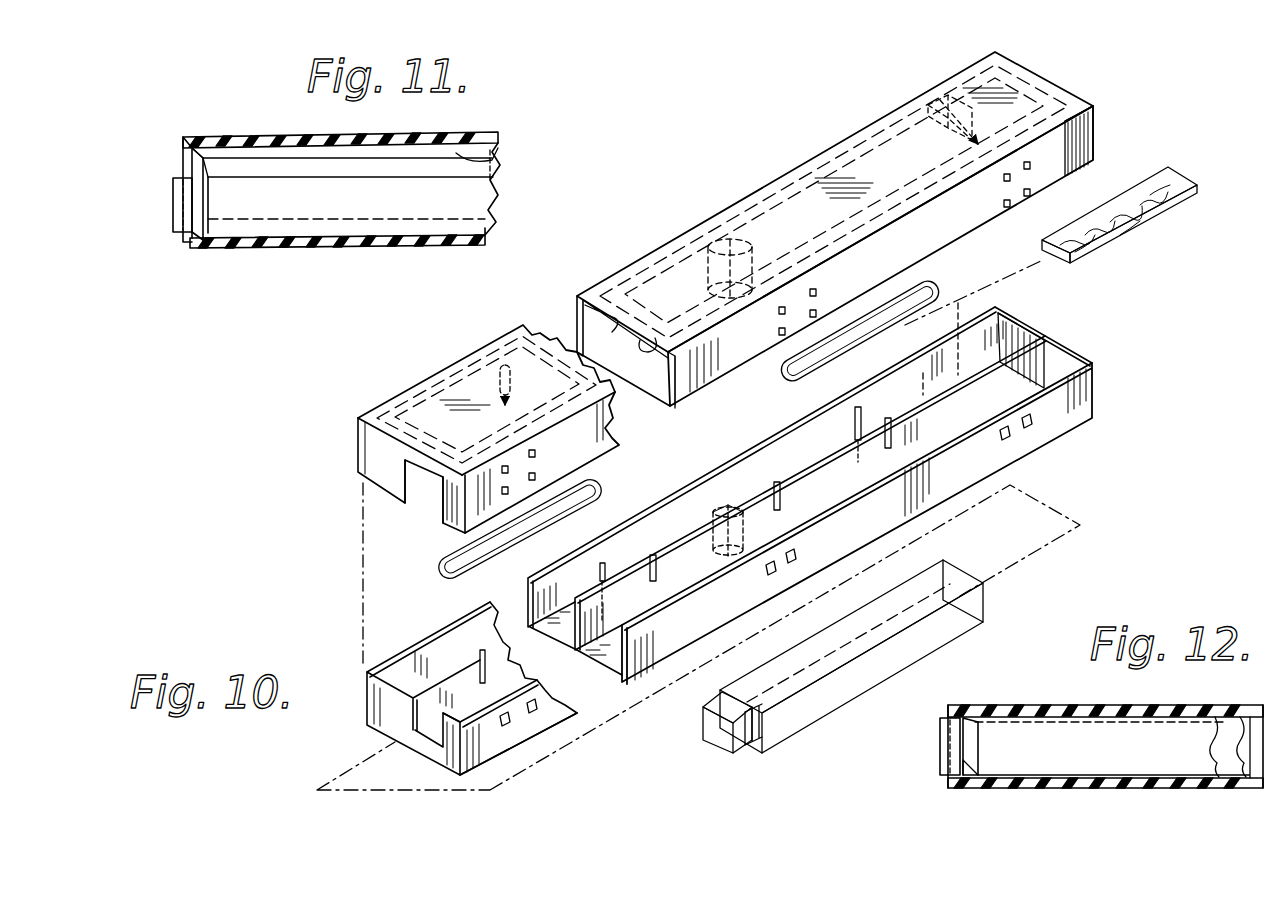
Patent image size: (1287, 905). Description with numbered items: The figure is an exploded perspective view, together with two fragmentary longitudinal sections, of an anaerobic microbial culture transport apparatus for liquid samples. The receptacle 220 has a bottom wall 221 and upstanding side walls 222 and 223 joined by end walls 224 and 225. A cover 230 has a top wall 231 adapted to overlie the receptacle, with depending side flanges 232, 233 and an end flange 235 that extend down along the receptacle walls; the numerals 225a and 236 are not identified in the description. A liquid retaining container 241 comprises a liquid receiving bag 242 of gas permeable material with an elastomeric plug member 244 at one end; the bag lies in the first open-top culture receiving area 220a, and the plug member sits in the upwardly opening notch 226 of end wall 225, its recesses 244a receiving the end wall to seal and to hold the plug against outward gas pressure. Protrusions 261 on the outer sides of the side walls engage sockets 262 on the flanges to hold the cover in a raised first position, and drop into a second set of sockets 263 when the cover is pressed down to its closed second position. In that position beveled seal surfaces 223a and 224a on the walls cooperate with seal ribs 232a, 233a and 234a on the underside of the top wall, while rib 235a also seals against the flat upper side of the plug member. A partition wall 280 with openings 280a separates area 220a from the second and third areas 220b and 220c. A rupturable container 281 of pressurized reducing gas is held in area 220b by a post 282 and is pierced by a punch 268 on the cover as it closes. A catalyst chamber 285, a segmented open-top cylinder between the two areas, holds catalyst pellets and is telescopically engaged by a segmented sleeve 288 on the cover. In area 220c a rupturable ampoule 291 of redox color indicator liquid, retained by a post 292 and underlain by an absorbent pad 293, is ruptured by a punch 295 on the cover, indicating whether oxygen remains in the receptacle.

In FIG. 10, the receptacle 220 is at (716, 466).
In FIG. 10, the first open-top culture device receiving area 220a is at (623, 684).
In FIG. 10, the second open top container retaining area 220b is at (562, 636).
In FIG. 10, the third open top container retaining area 220c is at (893, 428).
In FIG. 10, the bottom wall 221 is at (603, 682).
In FIG. 11, the bottom wall 221 is at (378, 250).
In FIG. 12, the bottom wall 221 is at (1112, 790).
In FIG. 10, the side wall 222 is at (985, 460).
In FIG. 10, the side wall 223 is at (578, 566).
In FIG. 10, the beveled seal surface 223a is at (622, 632).
In FIG. 10, the end wall 224 is at (1080, 364).
In FIG. 10, the beveled seal surface 224a is at (1058, 340).
In FIG. 10, the end wall 225 is at (365, 706).
In FIG. 10, the end piece rear wall 225a is at (365, 680).
In FIG. 10, the notch 226 is at (428, 742).
In FIG. 11, the notch 226 is at (192, 232).
In FIG. 12, the notch 226 is at (960, 762).
In FIG. 10, the cover 230 is at (862, 112).
In FIG. 10, the top wall 231 is at (800, 186).
In FIG. 11, the top wall 231 is at (442, 138).
In FIG. 12, the top wall 231 is at (1125, 706).
In FIG. 10, the side flange 232 is at (762, 345).
In FIG. 10, the seal rib 232a is at (660, 352).
In FIG. 10, the side flange 233 is at (601, 336).
In FIG. 11, the side flange 233 is at (368, 172).
In FIG. 10, the seal rib 233a is at (585, 320).
In FIG. 11, the seal rib 233a is at (490, 166).
In FIG. 10, the seal rib 234a is at (1070, 98).
In FIG. 10, the end flange 235 is at (360, 454).
In FIG. 11, the end flange 235 is at (182, 148).
In FIG. 10, the seal rib 235a is at (444, 437).
In FIG. 11, the seal rib 235a is at (205, 158).
In FIG. 12, the seal rib 235a is at (985, 744).
In FIG. 10, the end cap notch 236 is at (410, 478).
In FIG. 10, the liquid retaining container 241 is at (895, 683).
In FIG. 11, the liquid retaining container 241 is at (292, 238).
In FIG. 12, the liquid retaining container 241 is at (1222, 706).
In FIG. 10, the liquid receiving bag 242 is at (960, 628).
In FIG. 11, the liquid receiving bag 242 is at (472, 178).
In FIG. 10, the plug member 244 is at (715, 742).
In FIG. 11, the plug member 244 is at (172, 222).
In FIG. 12, the plug member 244 is at (940, 750).
In FIG. 10, the recesses 244a is at (746, 712).
In FIG. 11, the recesses 244a is at (190, 188).
In FIG. 12, the recesses 244a is at (985, 754).
In FIG. 10, the protrusions 261 is at (1030, 427).
In FIG. 10, the sockets 262 is at (1033, 194).
In FIG. 10, the second set of sockets 263 is at (1033, 168).
In FIG. 10, the punch 268 is at (515, 398).
In FIG. 10, the partition wall 280 is at (690, 548).
In FIG. 10, the openings 280a is at (783, 496).
In FIG. 10, the rupturable container 281 is at (455, 572).
In FIG. 10, the pin or post 282 is at (606, 566).
In FIG. 10, the catalyst chamber 285 is at (728, 506).
In FIG. 10, the segmented cylindrical sleeve 288 is at (754, 262).
In FIG. 10, the rupturable container 291 is at (930, 292).
In FIG. 10, the post 292 is at (855, 432).
In FIG. 10, the absorbent pad 293 is at (1160, 175).
In FIG. 10, the punch 295 is at (932, 128).